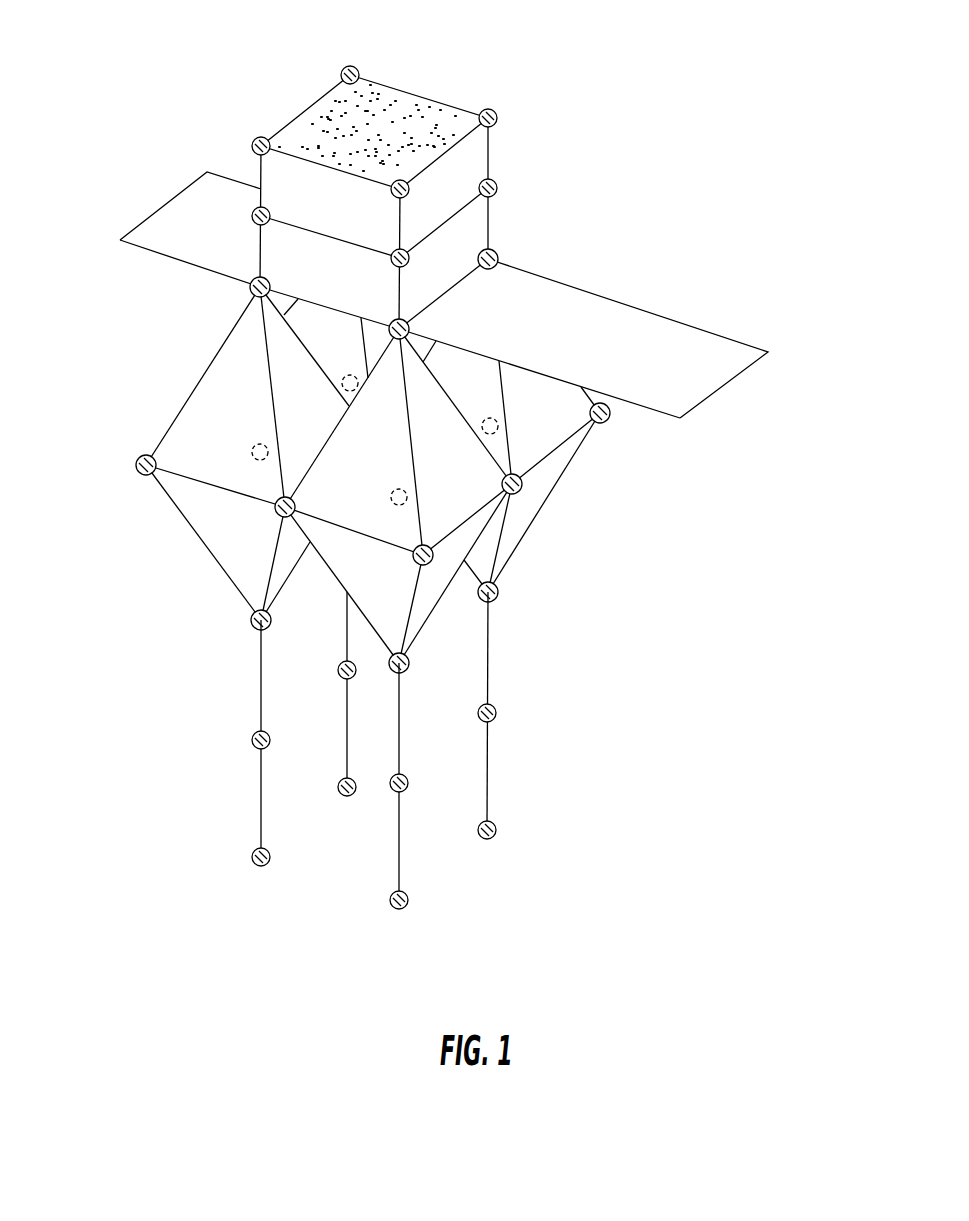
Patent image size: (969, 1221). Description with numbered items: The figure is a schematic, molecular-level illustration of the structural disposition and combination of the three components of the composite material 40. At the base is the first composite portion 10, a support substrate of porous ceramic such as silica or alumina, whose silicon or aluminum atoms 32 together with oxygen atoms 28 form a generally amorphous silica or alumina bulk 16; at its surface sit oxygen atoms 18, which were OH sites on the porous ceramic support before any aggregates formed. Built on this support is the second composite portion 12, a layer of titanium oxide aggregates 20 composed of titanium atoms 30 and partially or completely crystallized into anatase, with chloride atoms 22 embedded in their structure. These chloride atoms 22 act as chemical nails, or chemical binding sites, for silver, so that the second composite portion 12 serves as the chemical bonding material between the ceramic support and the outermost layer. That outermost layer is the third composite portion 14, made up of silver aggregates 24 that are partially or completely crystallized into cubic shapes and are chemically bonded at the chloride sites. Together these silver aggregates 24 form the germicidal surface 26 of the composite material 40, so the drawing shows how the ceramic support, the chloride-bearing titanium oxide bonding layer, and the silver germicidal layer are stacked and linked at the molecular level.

The first composite portion 10 is at (549, 799).
The second composite portion 12 is at (472, 494).
The third composite portion 14 is at (483, 231).
The silica or alumina bulk 16 is at (508, 593).
The oxygen atoms 18 is at (499, 590).
The titanium oxide aggregates 20 is at (183, 493).
The chloride atoms 22 is at (411, 329).
The silver aggregates 24 is at (498, 189).
The germicidal surface 26 is at (329, 123).
The oxygen atoms 28 is at (612, 414).
The titanium atoms 30 is at (397, 489).
The silicon or aluminum atoms 32 is at (409, 784).
The composite material 40 is at (598, 103).